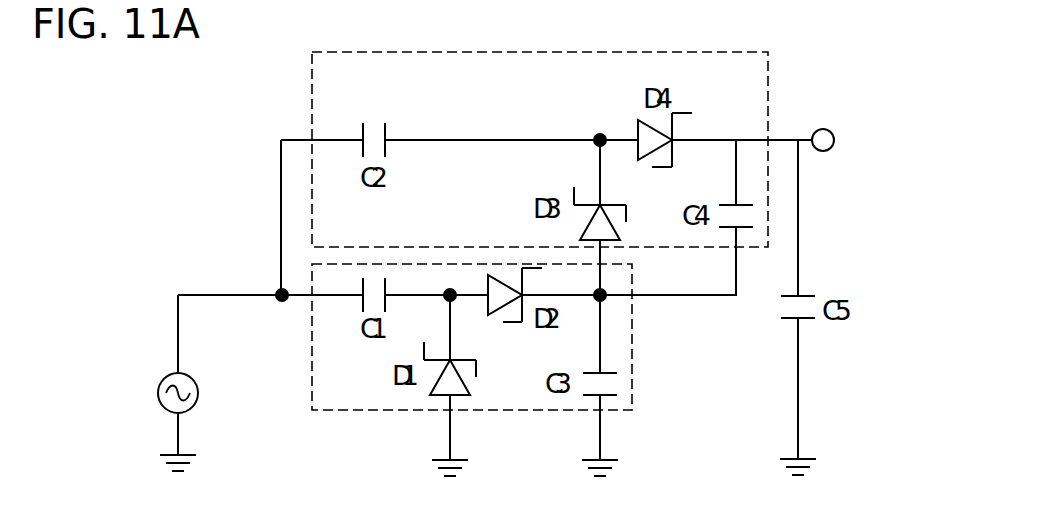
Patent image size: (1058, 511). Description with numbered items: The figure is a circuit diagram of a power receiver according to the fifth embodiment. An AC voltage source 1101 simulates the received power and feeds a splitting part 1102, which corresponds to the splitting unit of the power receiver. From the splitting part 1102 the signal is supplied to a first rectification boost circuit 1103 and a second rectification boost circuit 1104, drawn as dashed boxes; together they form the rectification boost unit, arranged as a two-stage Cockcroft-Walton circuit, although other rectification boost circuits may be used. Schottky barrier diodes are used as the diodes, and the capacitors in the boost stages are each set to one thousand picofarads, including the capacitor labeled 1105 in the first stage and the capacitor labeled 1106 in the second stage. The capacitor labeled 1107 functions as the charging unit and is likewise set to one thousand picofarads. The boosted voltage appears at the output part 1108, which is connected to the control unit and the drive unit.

The AC voltage source 1101 is at (162, 384).
The splitting part 1102 is at (282, 303).
The first rectification boost circuit 1103 is at (375, 414).
The second rectification boost circuit 1104 is at (573, 52).
The capacitor C3 1105 is at (614, 398).
The capacitor C4 1106 is at (749, 233).
The output capacitor C5 1107 is at (815, 332).
The output part 1108 is at (833, 148).